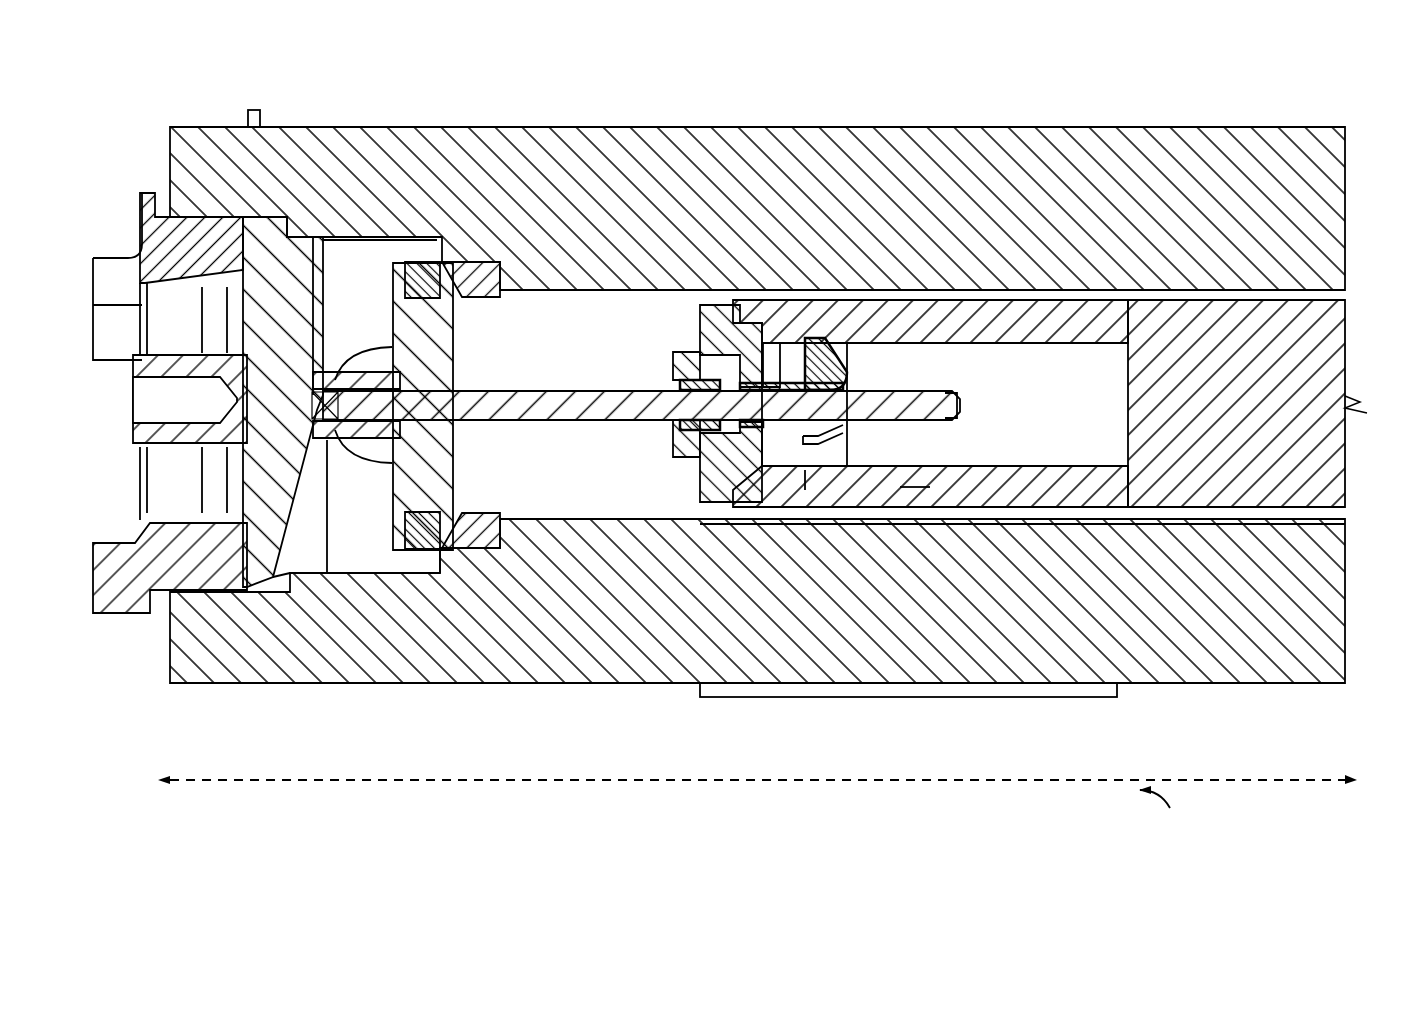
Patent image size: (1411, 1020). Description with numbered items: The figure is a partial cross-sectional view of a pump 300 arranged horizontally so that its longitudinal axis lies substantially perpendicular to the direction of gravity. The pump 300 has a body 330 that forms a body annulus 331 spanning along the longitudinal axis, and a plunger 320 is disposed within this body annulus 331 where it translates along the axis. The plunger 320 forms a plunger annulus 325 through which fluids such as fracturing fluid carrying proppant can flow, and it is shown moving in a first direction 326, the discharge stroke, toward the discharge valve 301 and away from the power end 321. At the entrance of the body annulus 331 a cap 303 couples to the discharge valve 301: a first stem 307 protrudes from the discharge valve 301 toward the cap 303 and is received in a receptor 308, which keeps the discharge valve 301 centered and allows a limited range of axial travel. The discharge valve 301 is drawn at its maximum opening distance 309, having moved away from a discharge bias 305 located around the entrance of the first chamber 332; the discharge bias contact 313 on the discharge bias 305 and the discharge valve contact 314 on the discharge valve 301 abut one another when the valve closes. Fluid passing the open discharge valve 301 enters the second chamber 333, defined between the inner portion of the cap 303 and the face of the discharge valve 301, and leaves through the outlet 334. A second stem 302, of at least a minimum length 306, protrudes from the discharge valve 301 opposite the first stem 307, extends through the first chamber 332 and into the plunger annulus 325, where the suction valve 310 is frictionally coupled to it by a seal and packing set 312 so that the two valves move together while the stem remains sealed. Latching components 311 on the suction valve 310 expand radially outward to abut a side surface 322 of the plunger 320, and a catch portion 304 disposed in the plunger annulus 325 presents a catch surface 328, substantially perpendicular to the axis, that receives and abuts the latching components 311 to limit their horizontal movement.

The pump 300 is at (134, 68).
The discharge valve 301 is at (390, 315).
The second stem 302 is at (589, 390).
The cap 303 is at (122, 442).
The catch portion 304 is at (794, 350).
The discharge bias 305 is at (487, 260).
The minimum length 306 is at (971, 403).
The first stem 307 is at (338, 577).
The receptor 308 is at (366, 362).
The maximum opening distance 309 is at (434, 260).
The suction valve 310 is at (708, 504).
The latching component 311 is at (826, 338).
The seal and packing set 312 is at (680, 358).
The discharge bias contact 313 is at (400, 552).
The discharge valve contact 314 is at (470, 549).
The plunger 320 is at (925, 300).
The power end 321 is at (1347, 333).
The side surface 322 is at (812, 470).
The plunger annulus 325 is at (1086, 373).
The first direction 326 is at (878, 487).
The catch surface 328 is at (788, 457).
The body 330 is at (1347, 187).
The body annulus 331 is at (405, 550).
The first chamber 332 is at (613, 483).
The second chamber 333 is at (378, 517).
The outlet 334 is at (342, 352).